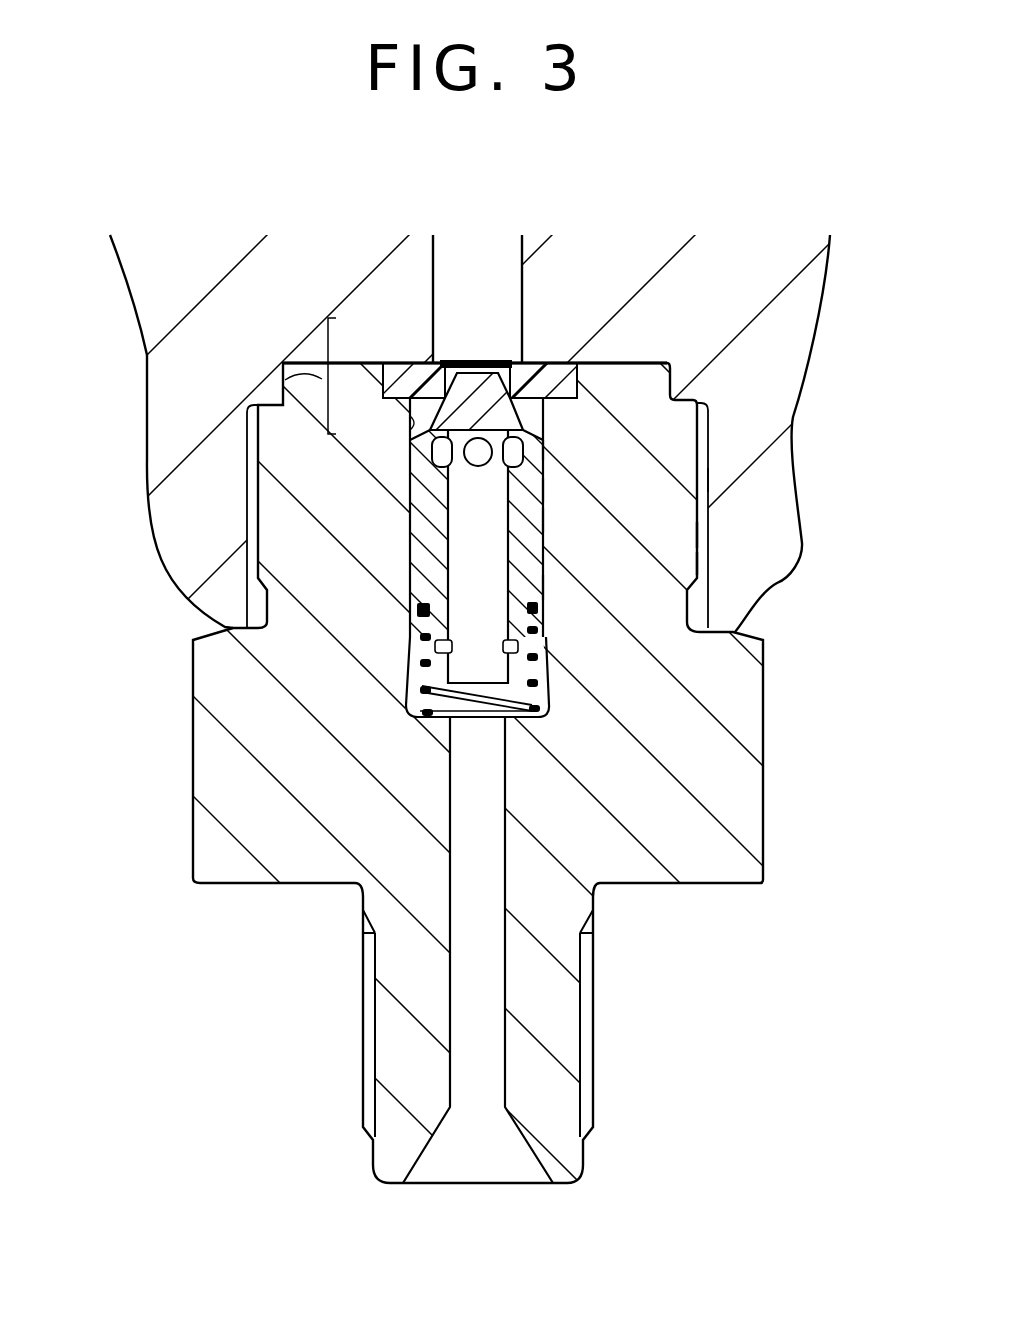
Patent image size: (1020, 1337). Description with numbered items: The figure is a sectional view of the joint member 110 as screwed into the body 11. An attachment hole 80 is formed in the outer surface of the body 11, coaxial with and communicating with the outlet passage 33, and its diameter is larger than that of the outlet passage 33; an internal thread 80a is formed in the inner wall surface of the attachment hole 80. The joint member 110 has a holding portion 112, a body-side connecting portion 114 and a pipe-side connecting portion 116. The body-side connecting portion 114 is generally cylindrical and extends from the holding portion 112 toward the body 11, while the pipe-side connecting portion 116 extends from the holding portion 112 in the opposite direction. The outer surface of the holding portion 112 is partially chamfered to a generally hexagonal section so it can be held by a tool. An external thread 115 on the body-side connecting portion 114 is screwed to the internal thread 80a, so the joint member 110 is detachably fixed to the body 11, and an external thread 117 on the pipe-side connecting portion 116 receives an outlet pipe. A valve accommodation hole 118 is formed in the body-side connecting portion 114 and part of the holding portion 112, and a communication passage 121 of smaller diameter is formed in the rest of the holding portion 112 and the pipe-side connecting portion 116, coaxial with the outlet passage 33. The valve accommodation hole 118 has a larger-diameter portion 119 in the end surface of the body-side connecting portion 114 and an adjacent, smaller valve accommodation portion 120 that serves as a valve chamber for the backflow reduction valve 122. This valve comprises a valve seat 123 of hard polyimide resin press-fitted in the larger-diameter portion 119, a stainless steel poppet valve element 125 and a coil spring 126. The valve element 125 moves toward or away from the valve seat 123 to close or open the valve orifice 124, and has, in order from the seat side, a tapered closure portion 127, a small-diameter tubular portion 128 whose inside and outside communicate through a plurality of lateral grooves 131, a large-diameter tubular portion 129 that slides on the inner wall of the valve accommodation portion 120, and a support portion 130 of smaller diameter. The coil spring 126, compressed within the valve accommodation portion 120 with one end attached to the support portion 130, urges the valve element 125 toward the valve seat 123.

The body 11 is at (163, 424).
The outlet passage 33 is at (520, 283).
The attachment hole 80 is at (708, 430).
The internal thread 80a is at (710, 480).
The joint member 110 is at (510, 750).
The holding portion 112 is at (752, 797).
The body-side connecting portion 114 is at (709, 533).
The external thread 115 is at (710, 560).
The pipe-side connecting portion 116 is at (570, 1022).
The external thread 117 is at (594, 1086).
The valve accommodation hole 118 is at (287, 378).
The larger-diameter portion 119 is at (383, 363).
The valve accommodation portion 120 is at (410, 421).
The communication passage 121 is at (500, 778).
The backflow reduction valve 122 is at (406, 539).
The valve seat 123 is at (540, 362).
The valve orifice 124 is at (462, 360).
The valve element 125 is at (557, 578).
The coil spring 126 is at (548, 712).
The closure portion 127 is at (548, 448).
The small-diameter tubular portion 128 is at (546, 490).
The large-diameter tubular portion 129 is at (546, 520).
The support portion 130 is at (585, 570).
The lateral grooves 131 is at (432, 452).